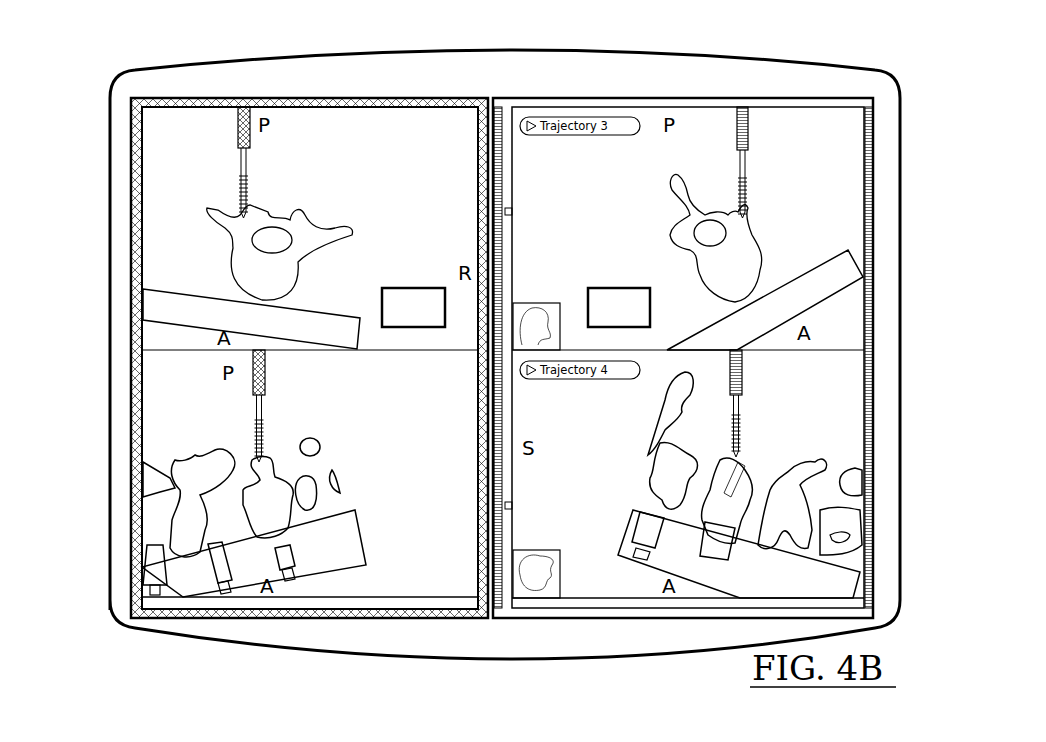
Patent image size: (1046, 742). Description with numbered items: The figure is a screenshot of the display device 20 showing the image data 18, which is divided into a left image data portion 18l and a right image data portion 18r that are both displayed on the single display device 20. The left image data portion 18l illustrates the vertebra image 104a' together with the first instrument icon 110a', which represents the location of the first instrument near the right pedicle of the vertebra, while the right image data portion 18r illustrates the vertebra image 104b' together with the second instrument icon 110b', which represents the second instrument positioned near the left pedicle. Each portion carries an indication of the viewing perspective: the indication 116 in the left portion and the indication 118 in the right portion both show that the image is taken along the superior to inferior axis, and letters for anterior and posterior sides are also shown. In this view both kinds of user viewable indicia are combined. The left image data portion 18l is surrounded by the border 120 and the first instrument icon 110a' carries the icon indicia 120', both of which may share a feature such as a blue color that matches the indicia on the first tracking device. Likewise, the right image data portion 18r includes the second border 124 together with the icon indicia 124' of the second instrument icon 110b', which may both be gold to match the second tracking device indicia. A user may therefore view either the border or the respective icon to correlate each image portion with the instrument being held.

The image data 18 is at (504, 66).
The left image data portion 18l is at (213, 96).
The right image data portion 18r is at (713, 94).
The display device 20 is at (904, 115).
The vertebra image 104a' is at (301, 236).
The vertebra image 104b' is at (761, 238).
The first instrument icon 110a' is at (145, 173).
The second instrument icon 110b' is at (850, 183).
The indication 116 is at (416, 284).
The indication 118 is at (613, 284).
The border 120 is at (270, 358).
The first icon indicia 120' is at (189, 95).
The second border 124 is at (722, 357).
The second icon indicia 124' is at (790, 96).